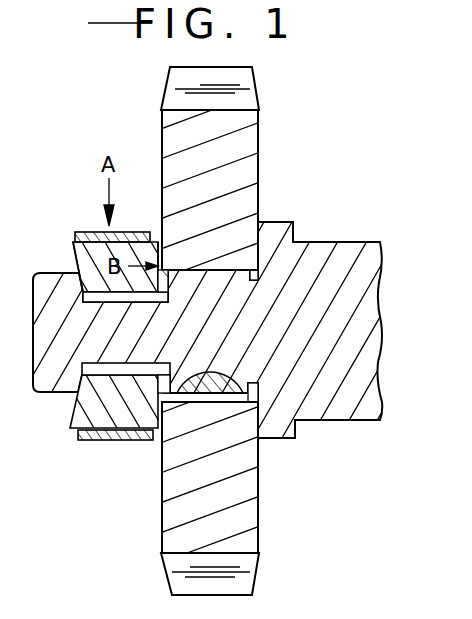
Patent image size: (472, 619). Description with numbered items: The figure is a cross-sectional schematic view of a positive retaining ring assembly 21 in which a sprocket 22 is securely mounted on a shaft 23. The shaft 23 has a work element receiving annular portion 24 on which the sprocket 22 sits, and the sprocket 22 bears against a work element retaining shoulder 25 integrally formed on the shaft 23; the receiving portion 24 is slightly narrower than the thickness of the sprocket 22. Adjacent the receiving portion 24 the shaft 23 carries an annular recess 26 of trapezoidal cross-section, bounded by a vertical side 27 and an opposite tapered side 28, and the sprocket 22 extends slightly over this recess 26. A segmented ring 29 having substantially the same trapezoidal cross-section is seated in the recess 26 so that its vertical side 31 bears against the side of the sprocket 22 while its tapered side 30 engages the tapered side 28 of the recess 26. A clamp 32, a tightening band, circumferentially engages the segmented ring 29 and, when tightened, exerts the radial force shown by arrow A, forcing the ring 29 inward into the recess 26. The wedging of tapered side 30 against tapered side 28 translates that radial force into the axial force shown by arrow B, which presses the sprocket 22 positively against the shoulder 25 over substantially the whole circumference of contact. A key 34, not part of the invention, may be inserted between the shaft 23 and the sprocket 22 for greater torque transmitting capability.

The positive retaining ring assembly 21 is at (72, 210).
The sprocket 22 is at (258, 138).
The shaft 23 is at (328, 248).
The work element receiving annular portion 24 is at (222, 272).
The work element retaining shoulder 25 is at (262, 224).
The annular recess 26 is at (118, 300).
The vertical side 27 is at (168, 297).
The tapered side 28 is at (82, 298).
The segmented ring 29 is at (156, 239).
The tapered side 30 is at (74, 249).
The vertical side 31 is at (173, 278).
The clamp 32 is at (109, 232).
The key 34 is at (214, 372).